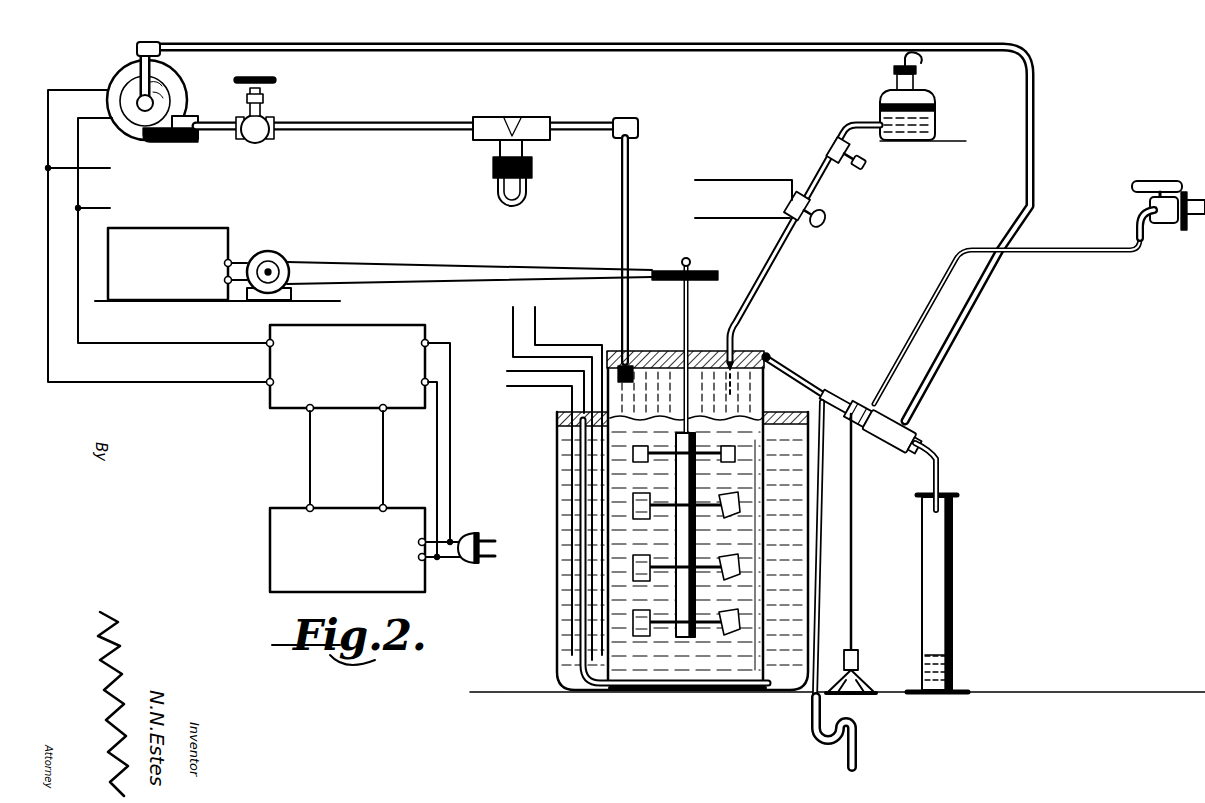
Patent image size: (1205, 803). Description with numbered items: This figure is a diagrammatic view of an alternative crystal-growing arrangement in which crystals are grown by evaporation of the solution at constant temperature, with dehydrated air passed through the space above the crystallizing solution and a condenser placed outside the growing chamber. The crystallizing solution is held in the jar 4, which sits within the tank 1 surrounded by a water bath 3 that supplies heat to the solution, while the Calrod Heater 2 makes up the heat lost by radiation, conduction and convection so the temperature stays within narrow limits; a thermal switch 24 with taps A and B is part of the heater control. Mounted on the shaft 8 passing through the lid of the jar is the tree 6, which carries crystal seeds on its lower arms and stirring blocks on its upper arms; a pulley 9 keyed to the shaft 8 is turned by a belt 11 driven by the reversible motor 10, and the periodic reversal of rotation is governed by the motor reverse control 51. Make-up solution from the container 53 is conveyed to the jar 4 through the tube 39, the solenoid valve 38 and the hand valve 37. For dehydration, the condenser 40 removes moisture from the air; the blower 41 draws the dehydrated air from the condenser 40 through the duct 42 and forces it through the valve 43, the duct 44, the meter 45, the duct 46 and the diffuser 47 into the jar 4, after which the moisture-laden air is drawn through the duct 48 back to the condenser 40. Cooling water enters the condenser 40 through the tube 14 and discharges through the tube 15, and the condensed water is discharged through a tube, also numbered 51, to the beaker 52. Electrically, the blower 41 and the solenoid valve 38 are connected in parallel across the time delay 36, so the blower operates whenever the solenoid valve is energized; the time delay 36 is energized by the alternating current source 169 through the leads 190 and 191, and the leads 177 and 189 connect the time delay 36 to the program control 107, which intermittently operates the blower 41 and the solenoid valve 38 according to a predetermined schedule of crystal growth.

The tank 1 is at (557, 596).
The Calrod Heater 2 is at (575, 668).
The bath 3 is at (560, 622).
The jar 4 is at (762, 653).
The tree 6 is at (700, 542).
The shaft 8 is at (681, 317).
The pulley 9 is at (708, 272).
The reversible motor 10 is at (283, 253).
The belt 11 is at (418, 268).
The tube 14 is at (1136, 256).
The tube 15 is at (815, 626).
The thermal switch 24 is at (600, 347).
The time delay 36 is at (268, 405).
The hand valve 37 is at (849, 152).
The solenoid valve 38 is at (813, 205).
The tube 39 is at (787, 246).
The condenser 40 is at (898, 450).
The blower 41 is at (180, 83).
The duct 42 is at (1033, 81).
The valve 43 is at (272, 78).
The duct 44 is at (280, 123).
The meter 45 is at (508, 122).
The duct 46 is at (621, 262).
The diffuser 47 is at (632, 368).
The duct 48 is at (786, 364).
The motor reverse control 51 is at (231, 233).
The beaker 52 is at (952, 535).
The container 53 is at (936, 112).
The program control 107 is at (270, 533).
The A. C. source 169 is at (478, 564).
The lead 177 is at (383, 472).
The lead 189 is at (310, 472).
The lead 190 is at (437, 452).
The lead 191 is at (450, 442).